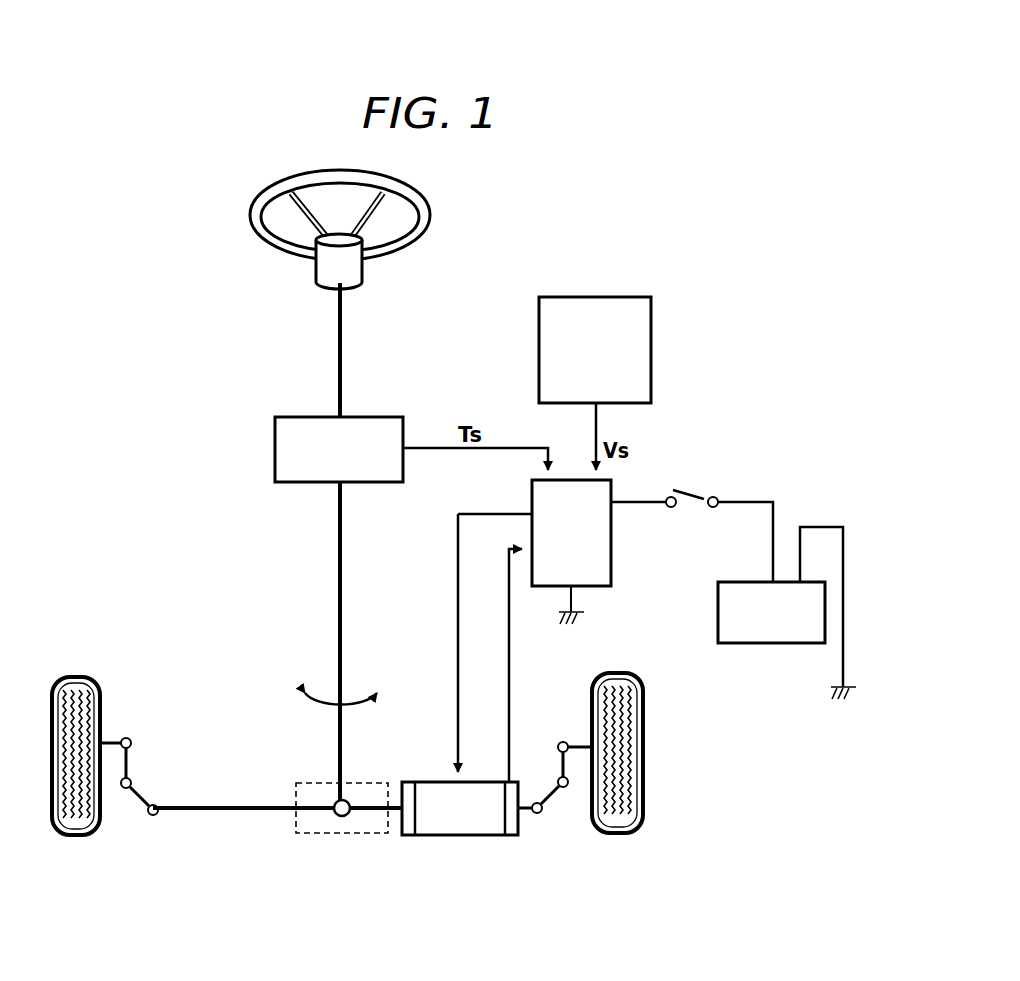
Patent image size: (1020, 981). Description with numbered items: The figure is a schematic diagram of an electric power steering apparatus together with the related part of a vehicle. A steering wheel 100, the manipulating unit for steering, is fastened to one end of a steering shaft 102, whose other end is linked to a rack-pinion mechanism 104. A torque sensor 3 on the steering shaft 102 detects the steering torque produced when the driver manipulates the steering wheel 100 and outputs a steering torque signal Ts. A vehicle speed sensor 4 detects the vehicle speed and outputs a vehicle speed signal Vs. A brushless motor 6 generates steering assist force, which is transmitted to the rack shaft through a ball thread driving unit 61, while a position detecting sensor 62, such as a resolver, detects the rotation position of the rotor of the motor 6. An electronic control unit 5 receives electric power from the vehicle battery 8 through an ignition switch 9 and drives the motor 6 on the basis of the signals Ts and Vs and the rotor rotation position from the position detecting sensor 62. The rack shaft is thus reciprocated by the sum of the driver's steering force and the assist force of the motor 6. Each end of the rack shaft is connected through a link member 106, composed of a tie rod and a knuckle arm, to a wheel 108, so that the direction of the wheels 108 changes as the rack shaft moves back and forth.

The steering wheel 100 is at (431, 212).
The steering shaft 102 is at (342, 340).
The torque sensor 3 is at (275, 432).
The vehicle speed sensor 4 is at (627, 296).
The electronic control unit (ECU) 5 is at (612, 531).
The ignition switch 9 is at (705, 487).
The battery 8 is at (783, 644).
The brushless motor 6 is at (463, 708).
The ball thread driving unit 61 is at (410, 836).
The position detecting sensor 62 is at (515, 836).
The rack-pinion mechanism 104 is at (338, 836).
The tie rod linkage 106 is at (150, 784).
The wheel 108 is at (73, 838).